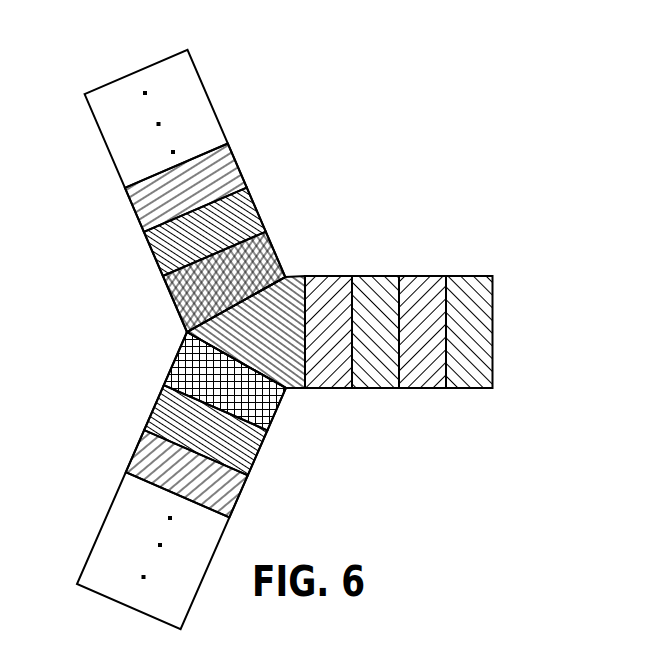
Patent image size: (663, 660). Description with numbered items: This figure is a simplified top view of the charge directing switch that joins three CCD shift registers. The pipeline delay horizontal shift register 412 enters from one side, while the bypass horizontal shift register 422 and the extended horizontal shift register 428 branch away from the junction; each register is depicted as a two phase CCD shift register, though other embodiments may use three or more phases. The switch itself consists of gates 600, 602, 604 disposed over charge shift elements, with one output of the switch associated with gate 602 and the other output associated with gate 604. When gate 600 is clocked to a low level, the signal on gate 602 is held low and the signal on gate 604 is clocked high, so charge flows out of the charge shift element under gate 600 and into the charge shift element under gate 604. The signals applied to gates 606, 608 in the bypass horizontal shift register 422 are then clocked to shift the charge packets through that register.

The pipeline delay horizontal shift register 412 is at (308, 272).
The bypass horizontal shift register 422 is at (289, 274).
The extended horizontal shift register 428 is at (178, 342).
The gate 600 is at (187, 332).
The gate 602 is at (278, 410).
The gate 604 is at (173, 299).
The gate 606 is at (155, 257).
The gate 608 is at (136, 212).